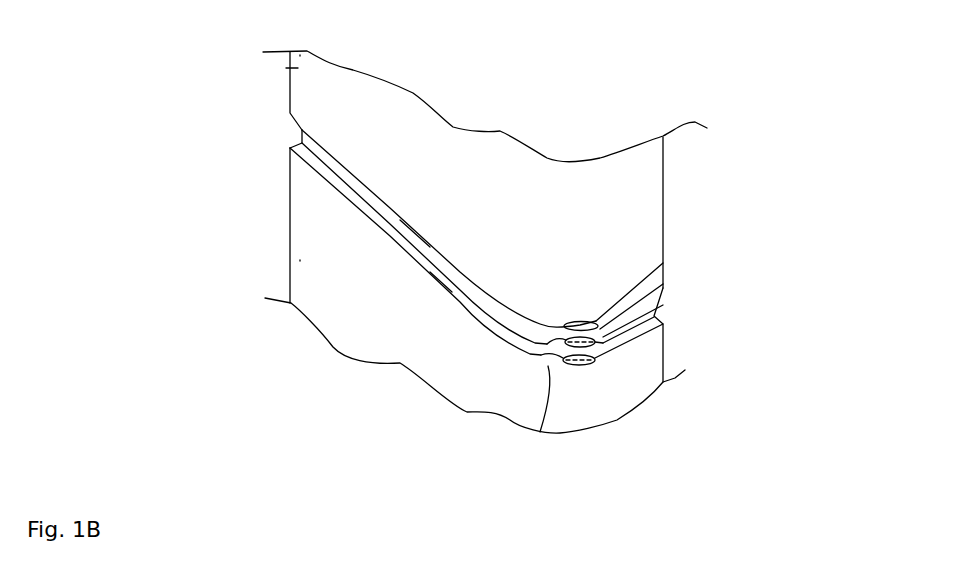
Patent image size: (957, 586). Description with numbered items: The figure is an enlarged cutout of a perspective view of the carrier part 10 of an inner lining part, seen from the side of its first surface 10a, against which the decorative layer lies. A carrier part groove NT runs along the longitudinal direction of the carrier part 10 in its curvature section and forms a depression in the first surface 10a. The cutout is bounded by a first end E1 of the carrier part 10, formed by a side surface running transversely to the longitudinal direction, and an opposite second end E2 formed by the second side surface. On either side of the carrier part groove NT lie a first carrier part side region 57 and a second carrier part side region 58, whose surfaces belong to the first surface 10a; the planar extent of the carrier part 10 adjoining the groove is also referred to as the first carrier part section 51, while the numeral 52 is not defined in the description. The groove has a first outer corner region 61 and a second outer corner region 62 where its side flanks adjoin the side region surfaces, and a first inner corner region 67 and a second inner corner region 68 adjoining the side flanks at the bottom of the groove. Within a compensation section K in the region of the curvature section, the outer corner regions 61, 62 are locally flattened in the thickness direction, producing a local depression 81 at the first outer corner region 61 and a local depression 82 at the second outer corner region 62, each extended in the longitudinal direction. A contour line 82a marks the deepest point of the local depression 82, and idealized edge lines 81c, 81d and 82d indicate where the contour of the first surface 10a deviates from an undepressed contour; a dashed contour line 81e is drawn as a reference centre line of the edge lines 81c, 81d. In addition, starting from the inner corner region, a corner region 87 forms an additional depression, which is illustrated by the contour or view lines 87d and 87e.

The carrier part 10 is at (695, 176).
The first surface of the carrier part 10a is at (300, 87).
The first carrier part section 51 is at (298, 68).
The second body part 52 is at (310, 318).
The first carrier part side region 57 is at (316, 246).
The second carrier part side region 58 is at (327, 86).
The carrier part groove NT is at (278, 127).
The first end of the carrier part E1 is at (290, 203).
The second end of the carrier part E2 is at (664, 352).
The first outer corner region 61 is at (463, 300).
The second outer corner region 62 is at (447, 250).
The first inner corner region 67 is at (442, 273).
The second inner corner region 68 is at (412, 243).
The local depression 82 is at (560, 318).
The contour line of the depression 82a is at (663, 284).
The idealized edge line of the depression 82d is at (663, 263).
The corner region for additional depression 87 is at (551, 364).
The contour line of the additional depression 87d is at (551, 355).
The contour line of the additional depression 87e is at (663, 305).
The local depression 81 is at (555, 377).
The idealized edge line of the depression 81c is at (600, 372).
The idealized edge line of the depression 81d is at (600, 353).
The dashed contour line 81e is at (590, 372).
The compensation section K is at (590, 285).